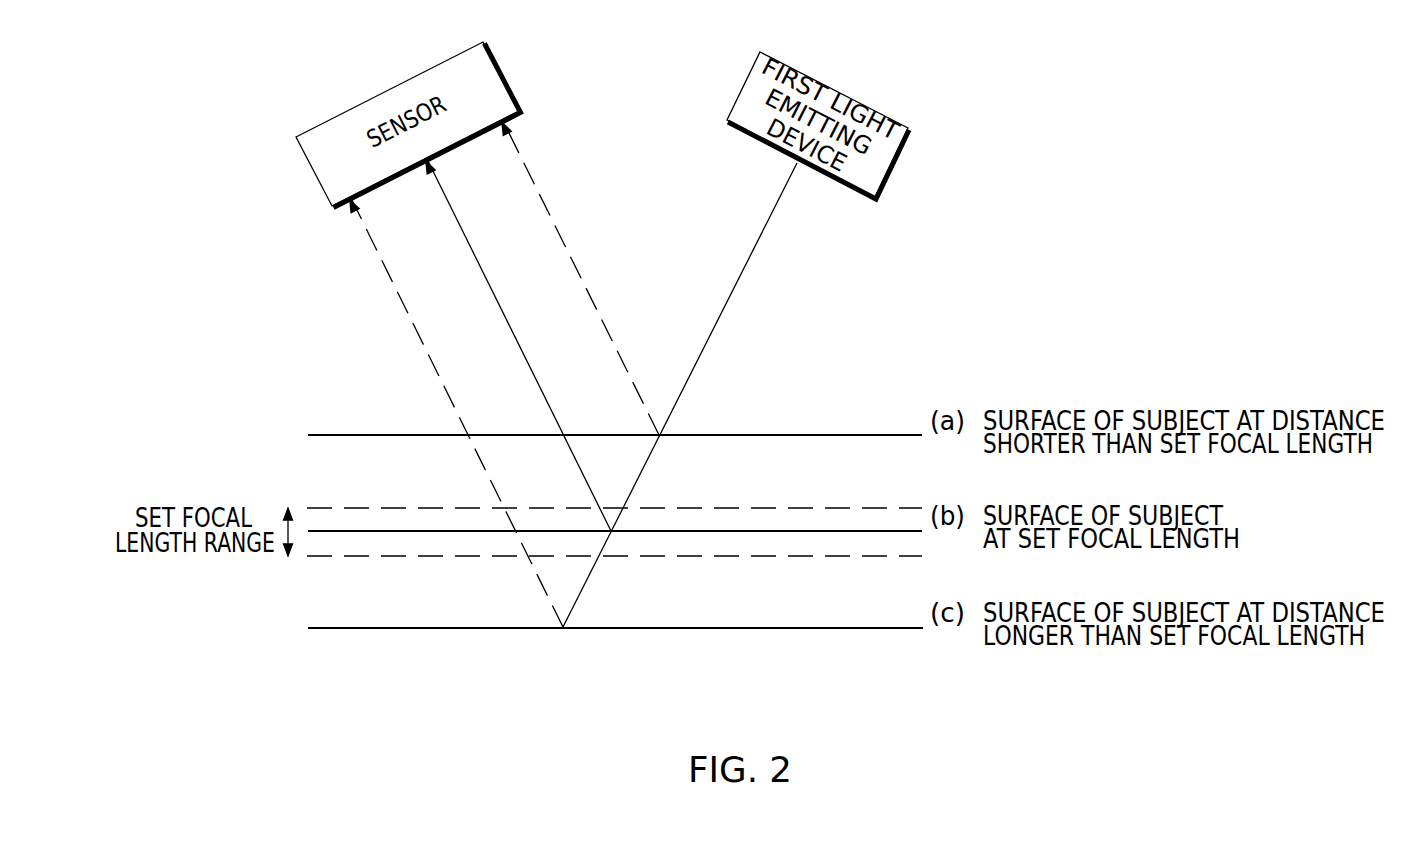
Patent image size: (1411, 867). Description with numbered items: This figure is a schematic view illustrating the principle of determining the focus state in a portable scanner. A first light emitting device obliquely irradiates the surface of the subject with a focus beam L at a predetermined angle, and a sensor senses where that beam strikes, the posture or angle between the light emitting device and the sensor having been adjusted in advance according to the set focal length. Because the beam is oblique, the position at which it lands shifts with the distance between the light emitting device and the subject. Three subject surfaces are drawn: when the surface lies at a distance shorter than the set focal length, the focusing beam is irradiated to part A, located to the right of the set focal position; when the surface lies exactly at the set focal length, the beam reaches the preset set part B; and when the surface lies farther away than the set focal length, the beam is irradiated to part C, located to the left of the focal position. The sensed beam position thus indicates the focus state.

The focus beam L is at (727, 303).
The part A is at (659, 433).
The set part B is at (611, 529).
The part C is at (563, 625).